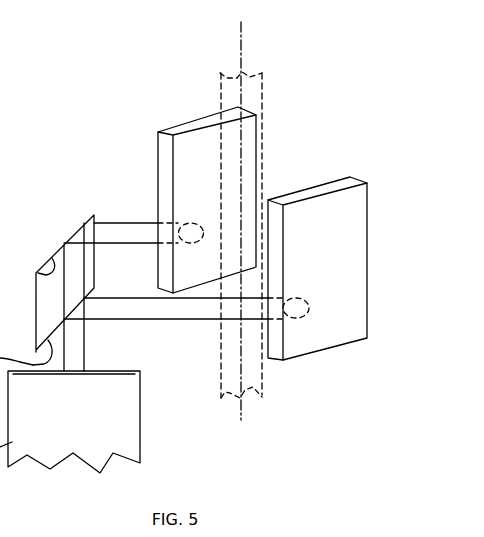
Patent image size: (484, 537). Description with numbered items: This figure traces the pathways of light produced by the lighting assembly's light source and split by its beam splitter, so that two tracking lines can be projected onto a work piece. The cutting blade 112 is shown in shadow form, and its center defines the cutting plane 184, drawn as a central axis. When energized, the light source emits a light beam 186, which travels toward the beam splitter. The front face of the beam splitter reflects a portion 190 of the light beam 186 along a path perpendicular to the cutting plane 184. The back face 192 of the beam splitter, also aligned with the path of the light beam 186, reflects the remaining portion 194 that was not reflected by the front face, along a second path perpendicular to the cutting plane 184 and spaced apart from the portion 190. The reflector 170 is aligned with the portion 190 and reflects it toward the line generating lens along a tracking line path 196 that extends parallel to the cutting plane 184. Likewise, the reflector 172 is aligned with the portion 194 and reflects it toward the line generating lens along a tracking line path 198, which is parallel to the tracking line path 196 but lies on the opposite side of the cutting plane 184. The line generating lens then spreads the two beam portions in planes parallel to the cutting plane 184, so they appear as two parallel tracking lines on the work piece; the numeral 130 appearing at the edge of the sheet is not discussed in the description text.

The positioning assembly 130 is at (1, 66).
The cutting blade 112 is at (220, 98).
The cutting plane 184 is at (242, 33).
The reflector 172 is at (158, 147).
The tracking line path 198 is at (188, 226).
The portion of the light beam 194 is at (117, 223).
The back face 192 is at (42, 268).
The light beam 186 is at (137, 371).
The portion of the light beam 190 is at (143, 319).
The reflector 170 is at (337, 345).
The tracking line path 196 is at (293, 318).